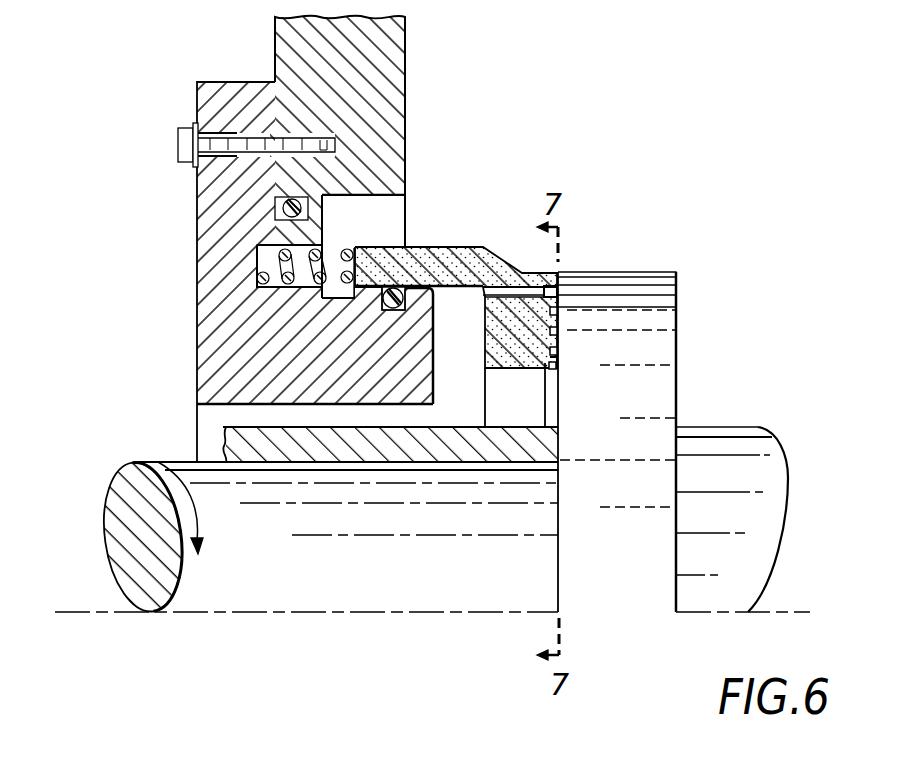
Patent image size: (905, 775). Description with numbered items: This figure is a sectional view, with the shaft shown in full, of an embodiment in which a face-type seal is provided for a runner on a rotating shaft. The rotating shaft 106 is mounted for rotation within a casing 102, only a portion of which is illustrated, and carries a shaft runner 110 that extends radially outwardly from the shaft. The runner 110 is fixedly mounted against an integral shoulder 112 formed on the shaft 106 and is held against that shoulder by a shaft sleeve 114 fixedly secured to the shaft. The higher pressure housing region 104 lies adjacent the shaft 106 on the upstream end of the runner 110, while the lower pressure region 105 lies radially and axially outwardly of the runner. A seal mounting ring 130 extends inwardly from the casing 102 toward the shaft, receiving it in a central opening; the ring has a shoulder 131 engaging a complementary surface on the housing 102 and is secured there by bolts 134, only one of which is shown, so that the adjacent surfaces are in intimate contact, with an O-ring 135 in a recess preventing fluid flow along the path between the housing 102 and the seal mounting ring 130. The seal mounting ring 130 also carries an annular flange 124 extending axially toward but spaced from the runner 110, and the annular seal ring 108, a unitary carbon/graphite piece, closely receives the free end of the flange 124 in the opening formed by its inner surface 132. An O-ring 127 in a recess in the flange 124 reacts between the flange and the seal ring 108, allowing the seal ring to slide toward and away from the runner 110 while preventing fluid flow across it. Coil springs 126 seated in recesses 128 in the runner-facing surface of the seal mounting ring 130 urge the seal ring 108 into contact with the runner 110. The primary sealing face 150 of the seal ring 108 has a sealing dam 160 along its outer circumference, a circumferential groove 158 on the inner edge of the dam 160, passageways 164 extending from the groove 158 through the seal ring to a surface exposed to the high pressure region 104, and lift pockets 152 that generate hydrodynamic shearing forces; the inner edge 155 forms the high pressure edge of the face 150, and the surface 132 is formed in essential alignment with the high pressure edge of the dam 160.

The casing 102 is at (300, 48).
The higher pressure housing region 104 is at (527, 401).
The lower pressure region 105 is at (506, 185).
The rotating shaft 106 is at (457, 571).
The seal ring 108 is at (430, 268).
The shaft runner 110 is at (640, 273).
The integral shoulder 112 is at (676, 586).
The shaft sleeve 114 is at (232, 443).
The flange 124 is at (397, 368).
The coil springs 126 is at (287, 268).
The O-ring 127 is at (408, 313).
The recesses 128 is at (258, 250).
The seal mounting ring 130 is at (292, 350).
The shoulder 131 is at (280, 206).
The inner surface 132 is at (440, 289).
The bolts 134 is at (178, 146).
The O-ring 135 is at (308, 212).
The primary sealing face 150 is at (558, 354).
The lift pockets 152 is at (558, 330).
The inner edge 155 is at (553, 368).
The circumferential groove 158 is at (557, 294).
The sealing dam 160 is at (557, 288).
The passageways 164 is at (523, 295).